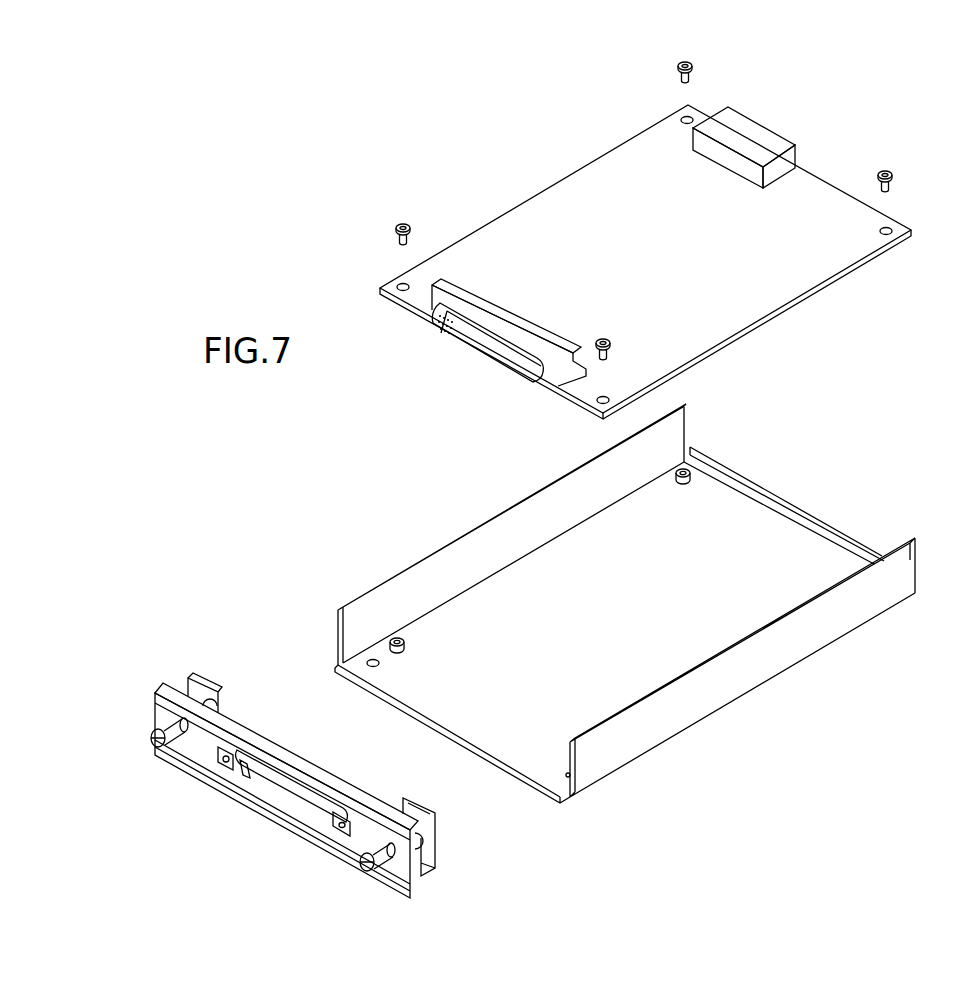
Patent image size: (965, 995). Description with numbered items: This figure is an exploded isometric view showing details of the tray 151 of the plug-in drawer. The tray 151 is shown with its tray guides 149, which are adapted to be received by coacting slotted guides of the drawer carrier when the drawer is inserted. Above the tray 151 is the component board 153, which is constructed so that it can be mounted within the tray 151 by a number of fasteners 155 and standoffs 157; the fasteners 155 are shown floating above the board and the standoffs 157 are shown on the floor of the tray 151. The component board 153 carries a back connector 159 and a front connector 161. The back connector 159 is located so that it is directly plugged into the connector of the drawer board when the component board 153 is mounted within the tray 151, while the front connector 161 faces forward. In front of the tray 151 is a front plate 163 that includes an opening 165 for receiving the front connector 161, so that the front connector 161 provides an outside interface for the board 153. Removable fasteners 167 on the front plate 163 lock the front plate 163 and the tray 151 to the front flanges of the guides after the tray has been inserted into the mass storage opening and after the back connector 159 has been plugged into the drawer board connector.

The tray guides 149 is at (535, 544).
The tray 151 is at (757, 513).
The component board 153 is at (685, 256).
The fasteners 155 is at (692, 68).
The standoffs 157 is at (406, 645).
The back connector 159 is at (770, 136).
The front connector 161 is at (540, 376).
The front plate 163 is at (235, 723).
The opening 165 is at (280, 792).
The removable fasteners 167 is at (155, 752).